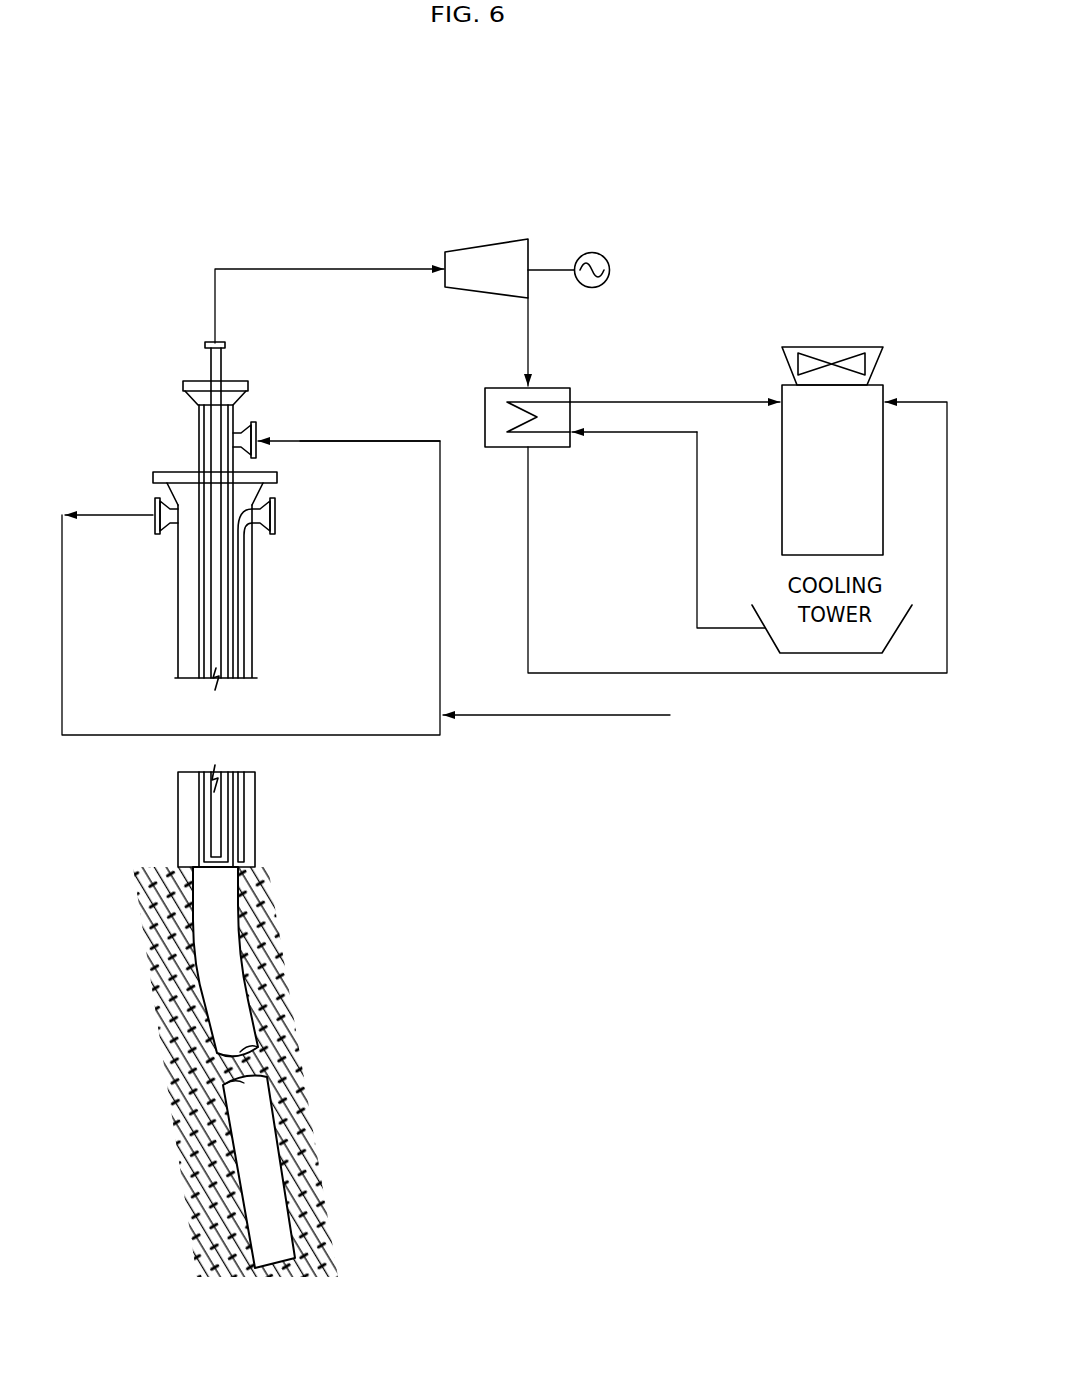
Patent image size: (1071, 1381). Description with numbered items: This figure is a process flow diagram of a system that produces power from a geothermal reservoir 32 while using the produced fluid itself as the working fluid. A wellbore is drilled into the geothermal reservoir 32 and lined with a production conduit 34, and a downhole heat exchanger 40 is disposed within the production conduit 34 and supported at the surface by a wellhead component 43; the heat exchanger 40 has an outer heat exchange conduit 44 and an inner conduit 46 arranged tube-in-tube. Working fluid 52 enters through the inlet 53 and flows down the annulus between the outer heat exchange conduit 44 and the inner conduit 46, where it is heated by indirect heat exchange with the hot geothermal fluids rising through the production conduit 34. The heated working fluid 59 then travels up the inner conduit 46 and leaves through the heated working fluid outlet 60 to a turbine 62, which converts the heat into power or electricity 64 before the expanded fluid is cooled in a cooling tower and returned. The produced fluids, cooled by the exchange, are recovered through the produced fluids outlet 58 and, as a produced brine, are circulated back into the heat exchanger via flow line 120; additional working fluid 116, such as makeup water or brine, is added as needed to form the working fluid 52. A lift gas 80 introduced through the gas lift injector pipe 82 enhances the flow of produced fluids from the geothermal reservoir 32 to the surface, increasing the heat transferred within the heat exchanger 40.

The geothermal reservoir 32 is at (298, 978).
The production conduit 34 is at (193, 951).
The downhole heat exchanger 40 is at (198, 380).
The lower flange 43 is at (152, 470).
The outer heat exchange conduit 44 is at (197, 648).
The inner conduit 46 is at (209, 604).
The working fluid 52 is at (393, 436).
The inlet 53 is at (255, 419).
The produced fluids outlet 58 is at (156, 538).
The heated working fluid 59 is at (306, 257).
The heated working fluid outlet 60 is at (228, 333).
The turbine 62 is at (509, 268).
The power or electricity 64 is at (592, 250).
The lift gas 80 is at (287, 495).
The gas lift injector pipe 82 is at (258, 590).
The additional working fluid 116 is at (615, 724).
The flow line 120 is at (251, 607).